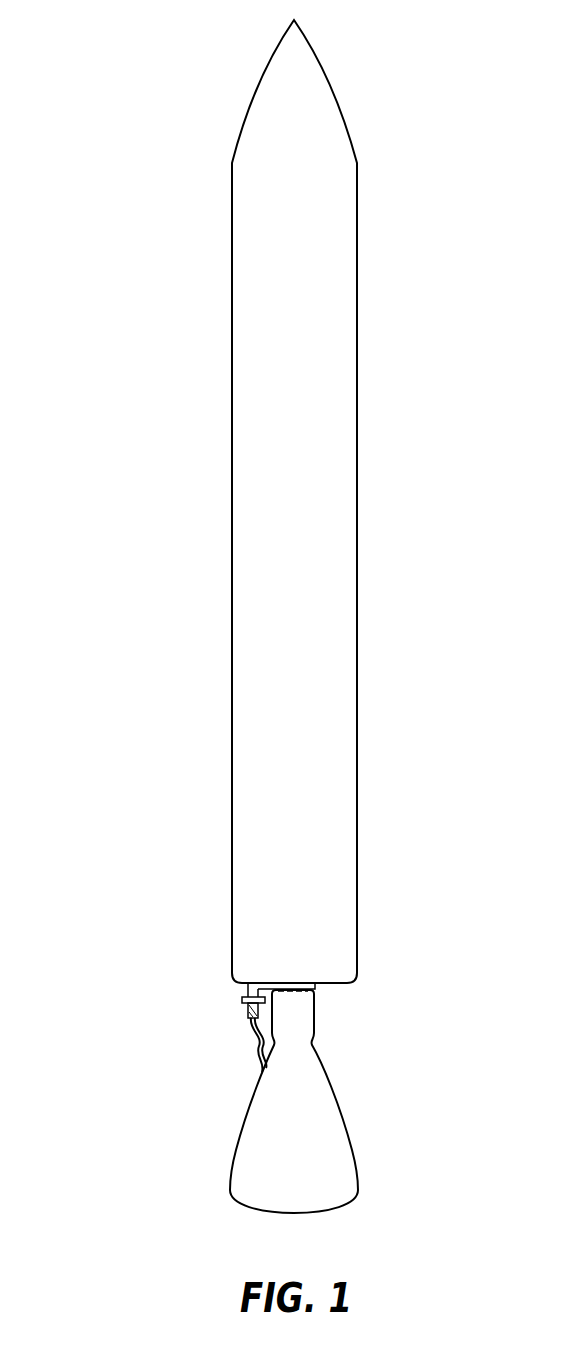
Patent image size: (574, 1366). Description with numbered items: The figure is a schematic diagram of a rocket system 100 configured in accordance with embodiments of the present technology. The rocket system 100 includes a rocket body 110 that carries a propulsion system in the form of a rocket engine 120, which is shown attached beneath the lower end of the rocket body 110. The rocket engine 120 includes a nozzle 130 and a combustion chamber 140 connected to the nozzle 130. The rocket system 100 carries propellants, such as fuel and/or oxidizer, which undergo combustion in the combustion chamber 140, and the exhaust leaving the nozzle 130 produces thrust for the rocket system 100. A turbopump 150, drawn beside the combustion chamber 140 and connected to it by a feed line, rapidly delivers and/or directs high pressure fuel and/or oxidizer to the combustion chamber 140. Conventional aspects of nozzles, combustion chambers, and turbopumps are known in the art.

The rocket system 100 is at (117, 121).
The rocket body 110 is at (337, 432).
The rocket engine 120 is at (198, 1110).
The nozzle 130 is at (332, 1138).
The combustion chamber 140 is at (305, 1010).
The turbopump 150 is at (240, 1003).